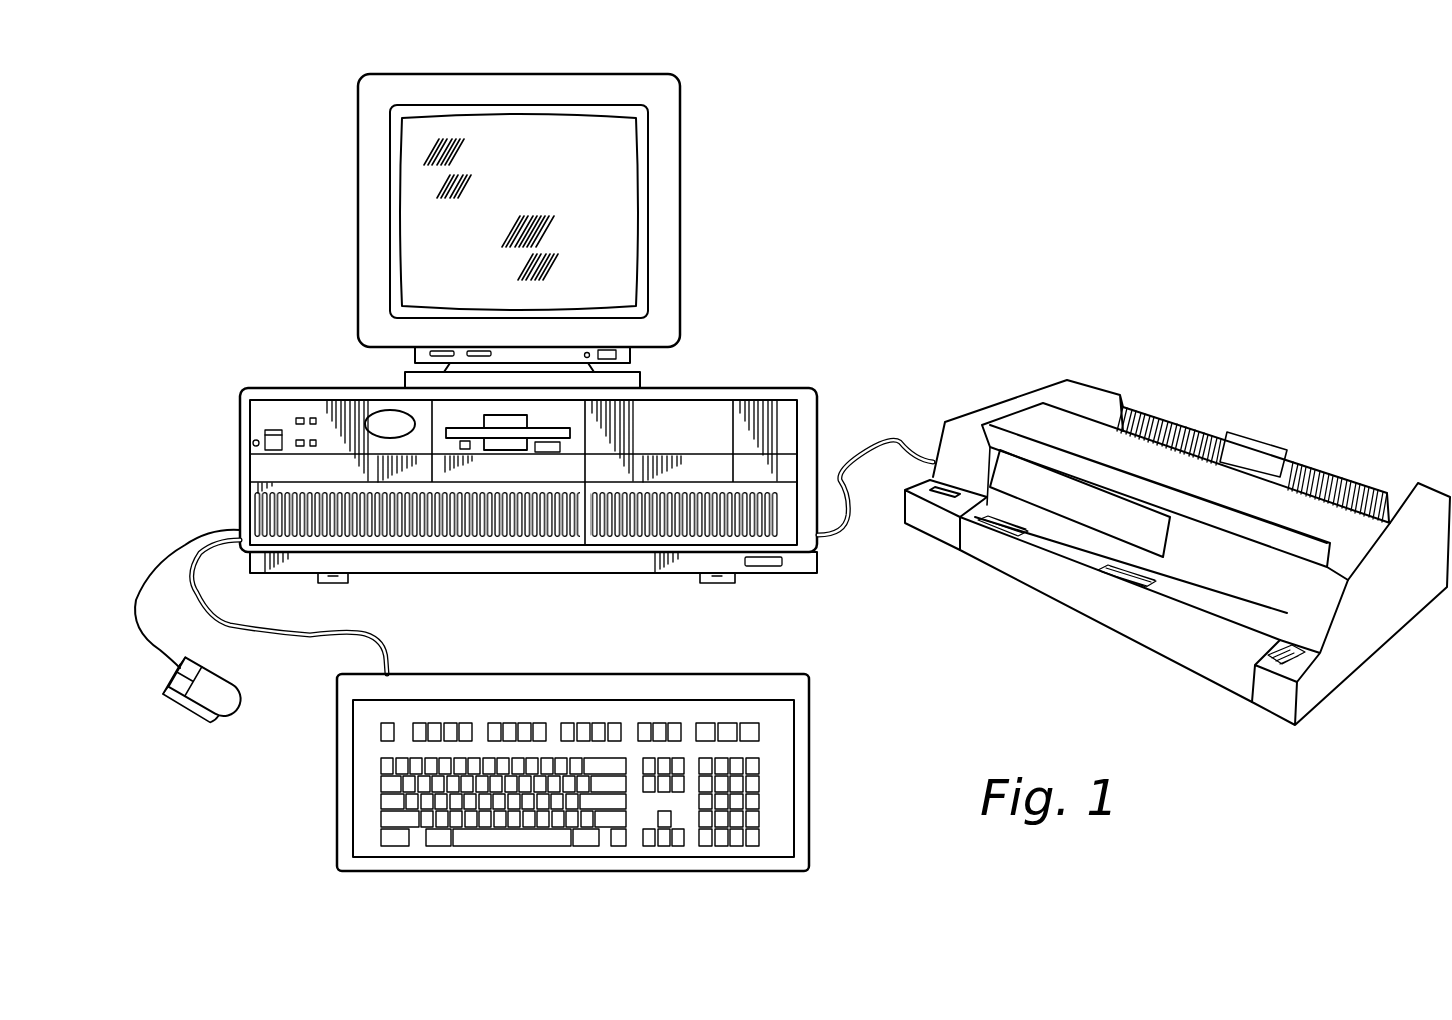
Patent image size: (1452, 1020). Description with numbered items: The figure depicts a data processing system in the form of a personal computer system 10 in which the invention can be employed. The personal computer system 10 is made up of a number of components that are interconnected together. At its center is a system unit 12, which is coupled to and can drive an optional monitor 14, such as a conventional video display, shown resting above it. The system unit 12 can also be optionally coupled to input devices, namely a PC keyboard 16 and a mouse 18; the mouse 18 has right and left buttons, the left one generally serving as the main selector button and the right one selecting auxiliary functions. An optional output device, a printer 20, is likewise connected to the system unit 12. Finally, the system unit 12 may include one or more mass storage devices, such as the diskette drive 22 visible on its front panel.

The personal computer system 10 is at (894, 193).
The system unit 12 is at (528, 461).
The monitor 14 is at (690, 240).
The PC keyboard 16 is at (686, 666).
The mouse 18 is at (187, 697).
The printer 20 is at (1002, 388).
The diskette drive 22 is at (512, 437).